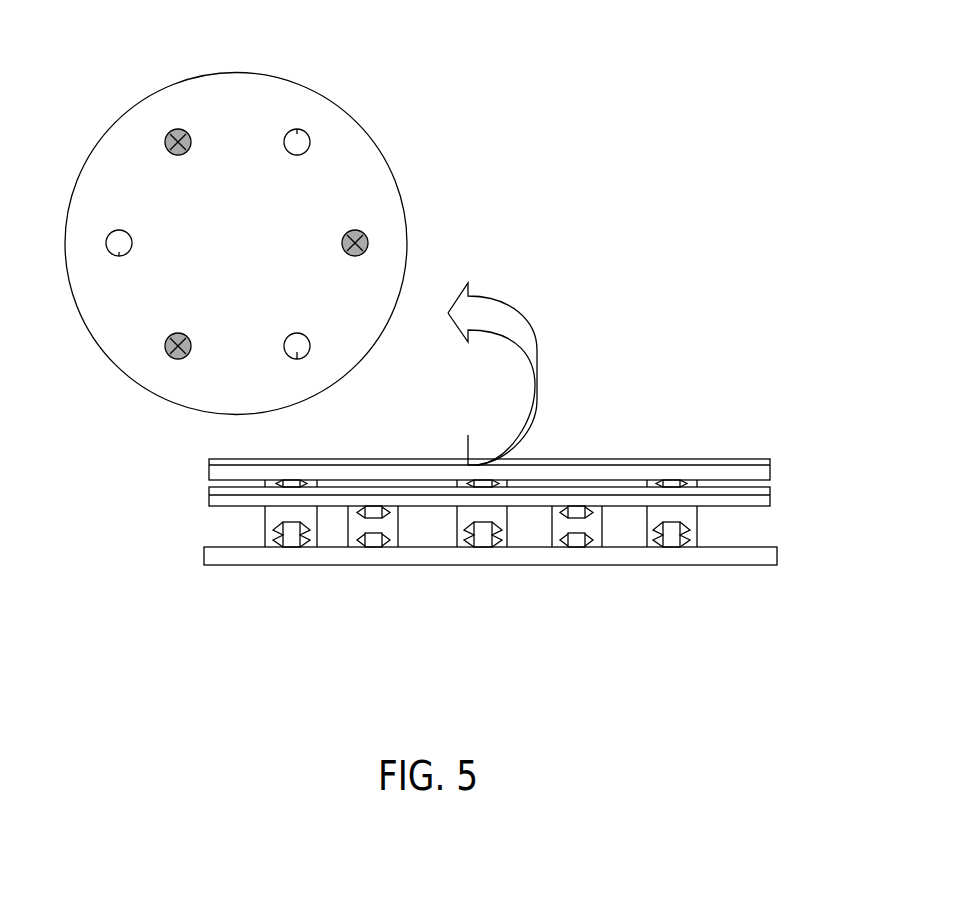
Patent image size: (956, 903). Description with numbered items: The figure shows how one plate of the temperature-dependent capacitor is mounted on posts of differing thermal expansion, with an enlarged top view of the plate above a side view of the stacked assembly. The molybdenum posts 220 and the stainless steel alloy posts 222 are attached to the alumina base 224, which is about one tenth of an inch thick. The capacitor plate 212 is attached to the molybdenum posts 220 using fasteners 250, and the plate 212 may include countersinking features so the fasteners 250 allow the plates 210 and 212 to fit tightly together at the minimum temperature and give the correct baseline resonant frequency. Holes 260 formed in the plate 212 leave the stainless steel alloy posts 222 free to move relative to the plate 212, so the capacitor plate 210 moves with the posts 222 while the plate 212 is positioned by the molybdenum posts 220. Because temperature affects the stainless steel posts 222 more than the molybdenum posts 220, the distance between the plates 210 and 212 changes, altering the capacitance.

The capacitor plate 210 is at (770, 470).
The capacitor plate 212 is at (190, 78).
The posts 220 is at (165, 142).
The posts 222 is at (118, 231).
The alumina base 224 is at (777, 557).
The fasteners 250 is at (176, 130).
The holes 260 is at (118, 257).